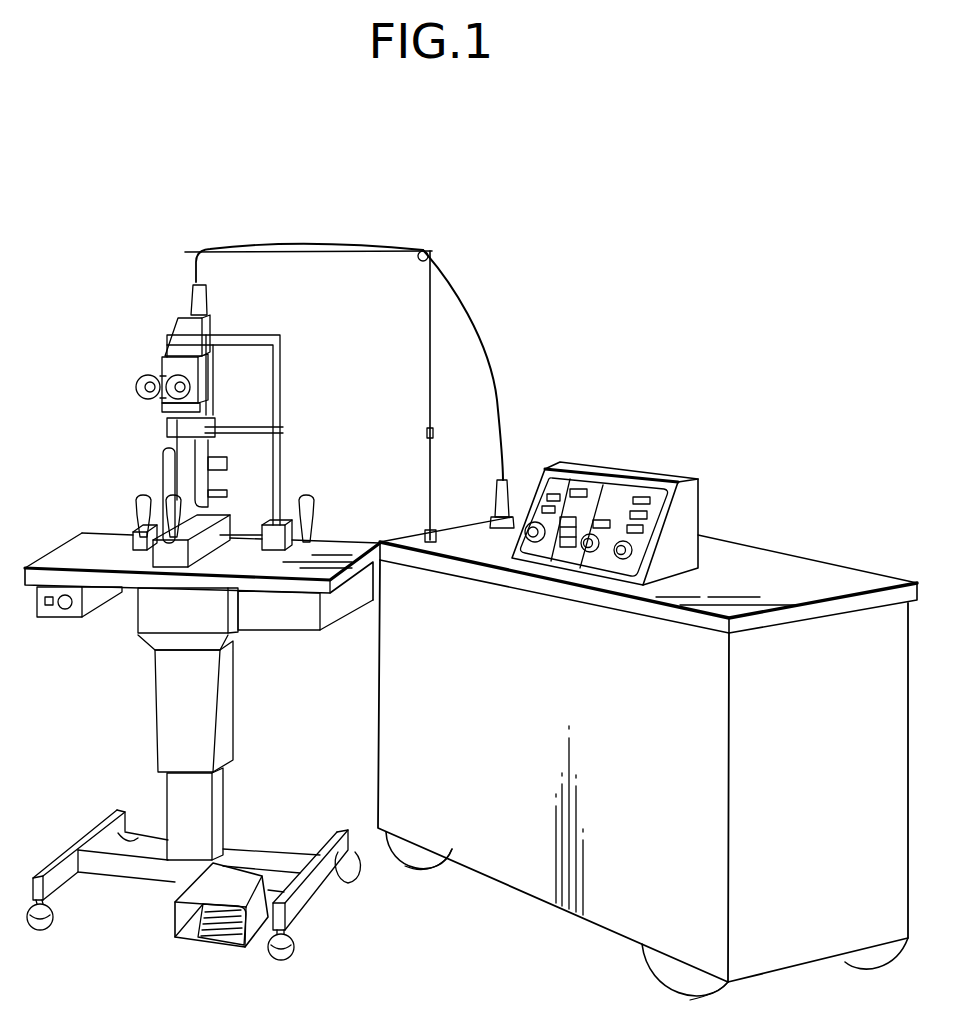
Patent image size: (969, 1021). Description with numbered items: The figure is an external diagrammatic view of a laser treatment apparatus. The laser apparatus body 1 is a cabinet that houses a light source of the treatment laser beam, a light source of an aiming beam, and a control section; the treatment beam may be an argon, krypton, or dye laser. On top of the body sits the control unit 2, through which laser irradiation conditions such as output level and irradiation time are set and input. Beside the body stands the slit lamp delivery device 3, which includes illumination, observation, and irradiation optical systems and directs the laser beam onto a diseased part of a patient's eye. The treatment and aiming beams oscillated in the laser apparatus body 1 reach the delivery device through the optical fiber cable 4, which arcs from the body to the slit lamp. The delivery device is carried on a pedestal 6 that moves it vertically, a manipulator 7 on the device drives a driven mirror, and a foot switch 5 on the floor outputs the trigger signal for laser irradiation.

The laser apparatus body 1 is at (617, 905).
The control unit 2 is at (640, 545).
The slit lamp delivery device 3 is at (115, 355).
The optical fiber cable 4 is at (480, 333).
The foot switch 5 is at (217, 933).
The pedestal 6 is at (147, 612).
The manipulator 7 is at (200, 428).